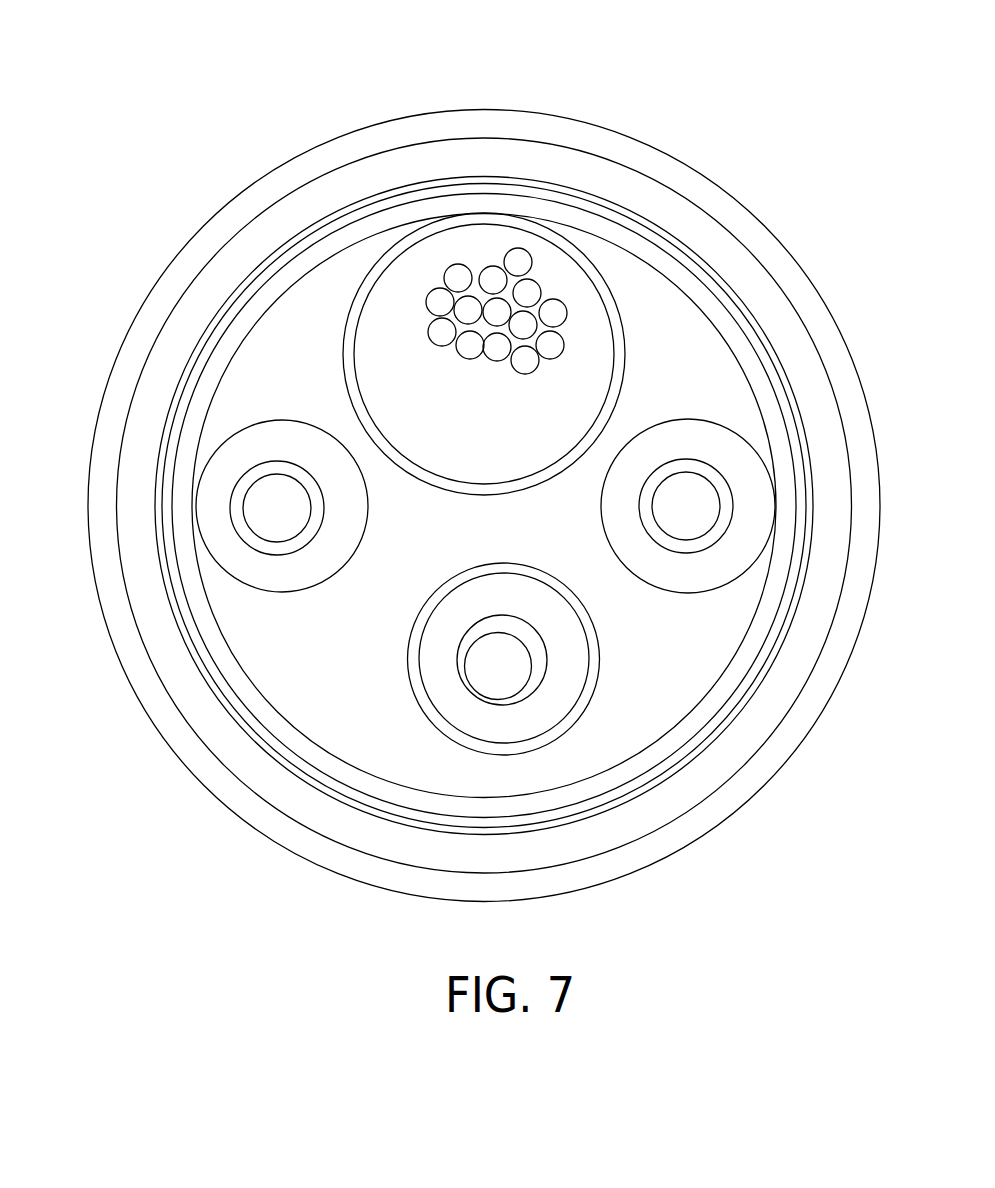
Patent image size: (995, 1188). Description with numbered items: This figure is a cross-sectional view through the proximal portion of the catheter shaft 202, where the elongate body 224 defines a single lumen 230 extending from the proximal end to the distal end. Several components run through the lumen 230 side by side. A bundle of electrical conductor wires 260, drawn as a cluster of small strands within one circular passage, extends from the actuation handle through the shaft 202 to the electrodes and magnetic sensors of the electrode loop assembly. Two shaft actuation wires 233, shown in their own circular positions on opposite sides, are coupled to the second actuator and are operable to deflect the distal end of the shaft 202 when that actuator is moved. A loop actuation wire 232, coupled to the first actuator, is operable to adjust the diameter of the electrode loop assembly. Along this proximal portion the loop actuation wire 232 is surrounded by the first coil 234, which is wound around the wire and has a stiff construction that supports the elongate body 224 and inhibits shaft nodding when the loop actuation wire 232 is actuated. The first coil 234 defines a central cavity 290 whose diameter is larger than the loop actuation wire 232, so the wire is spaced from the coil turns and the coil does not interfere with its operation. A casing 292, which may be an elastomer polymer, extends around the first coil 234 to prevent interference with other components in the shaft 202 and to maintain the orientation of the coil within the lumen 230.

The shaft 202 is at (616, 98).
The elongate body 224 is at (173, 260).
The lumen 230 is at (318, 262).
The electrical conductor wires 260 is at (465, 310).
The shaft actuation wires 233 is at (263, 498).
The casing 292 is at (412, 690).
The first coil 234 is at (485, 715).
The central cavity 290 is at (545, 658).
The loop actuation wire 232 is at (458, 660).